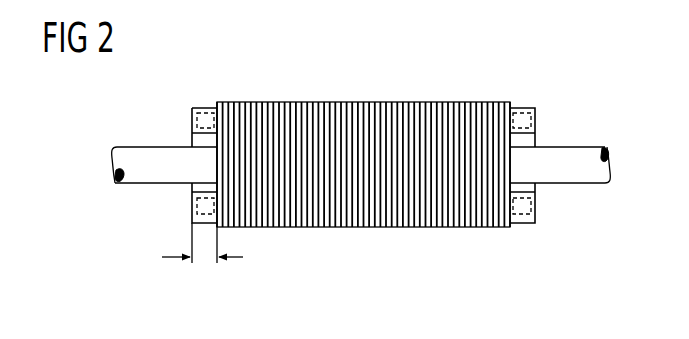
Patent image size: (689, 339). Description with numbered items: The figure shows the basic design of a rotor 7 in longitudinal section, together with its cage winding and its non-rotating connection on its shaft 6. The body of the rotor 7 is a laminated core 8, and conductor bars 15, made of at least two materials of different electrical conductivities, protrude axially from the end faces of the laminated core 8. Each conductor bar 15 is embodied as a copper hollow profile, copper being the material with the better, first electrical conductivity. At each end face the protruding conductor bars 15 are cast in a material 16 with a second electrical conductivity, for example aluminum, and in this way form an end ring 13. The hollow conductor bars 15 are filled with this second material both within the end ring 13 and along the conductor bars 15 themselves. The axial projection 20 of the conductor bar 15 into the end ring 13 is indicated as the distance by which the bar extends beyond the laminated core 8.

The shaft 6 is at (570, 176).
The rotor 7 is at (576, 106).
The laminated core 8 is at (298, 102).
The end ring 13 is at (184, 112).
The conductor bar 15 is at (197, 208).
The material with second electrical conductivity 16 is at (196, 107).
The axial projection 20 is at (203, 258).